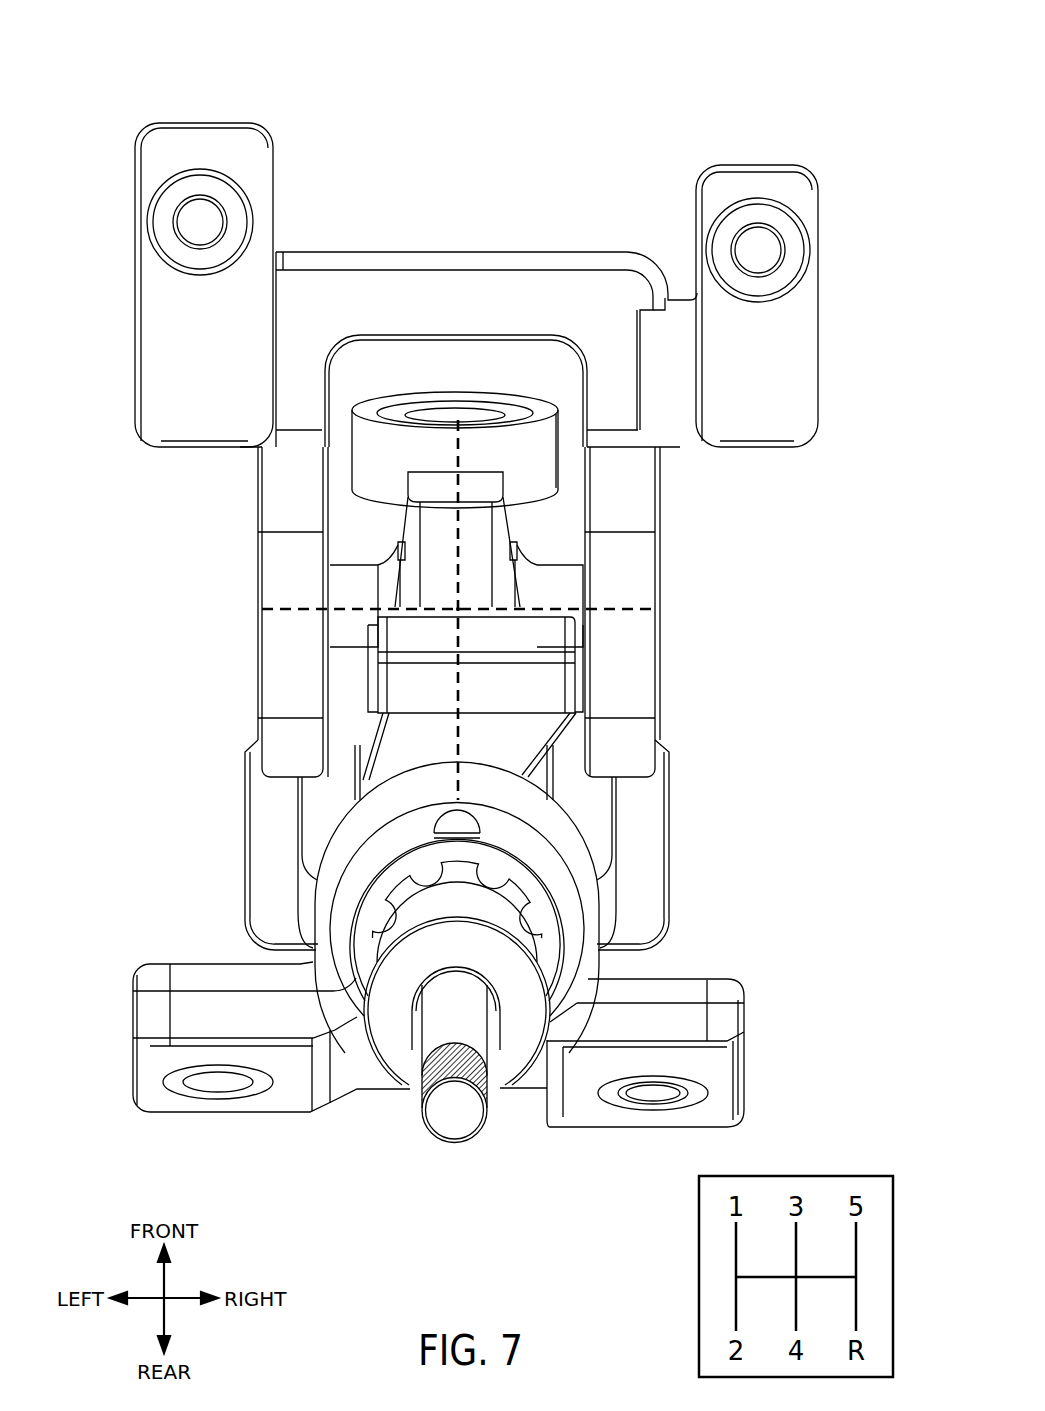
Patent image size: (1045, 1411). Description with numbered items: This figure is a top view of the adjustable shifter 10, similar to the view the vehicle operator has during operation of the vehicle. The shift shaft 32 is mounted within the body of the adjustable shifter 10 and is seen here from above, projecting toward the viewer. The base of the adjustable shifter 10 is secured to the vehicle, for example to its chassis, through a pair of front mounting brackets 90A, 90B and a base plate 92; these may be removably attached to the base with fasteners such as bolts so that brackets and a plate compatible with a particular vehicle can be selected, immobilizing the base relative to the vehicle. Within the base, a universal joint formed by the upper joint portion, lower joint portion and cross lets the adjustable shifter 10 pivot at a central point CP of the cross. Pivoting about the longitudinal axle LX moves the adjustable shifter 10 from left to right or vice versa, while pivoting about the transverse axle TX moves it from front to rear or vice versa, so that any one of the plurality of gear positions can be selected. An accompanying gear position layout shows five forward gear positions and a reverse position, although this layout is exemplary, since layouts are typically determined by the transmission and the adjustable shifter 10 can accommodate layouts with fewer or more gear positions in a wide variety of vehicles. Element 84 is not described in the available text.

The adjustable shifter 10 is at (764, 42).
The front mounting bracket 90A is at (205, 123).
The front mounting bracket 90B is at (755, 166).
The bracket 84 is at (600, 250).
The base plate 92 is at (268, 1112).
The shift shaft 32 is at (440, 1137).
The longitudinal axle LX is at (462, 455).
The transverse axle TX is at (262, 612).
The central point CP is at (463, 604).